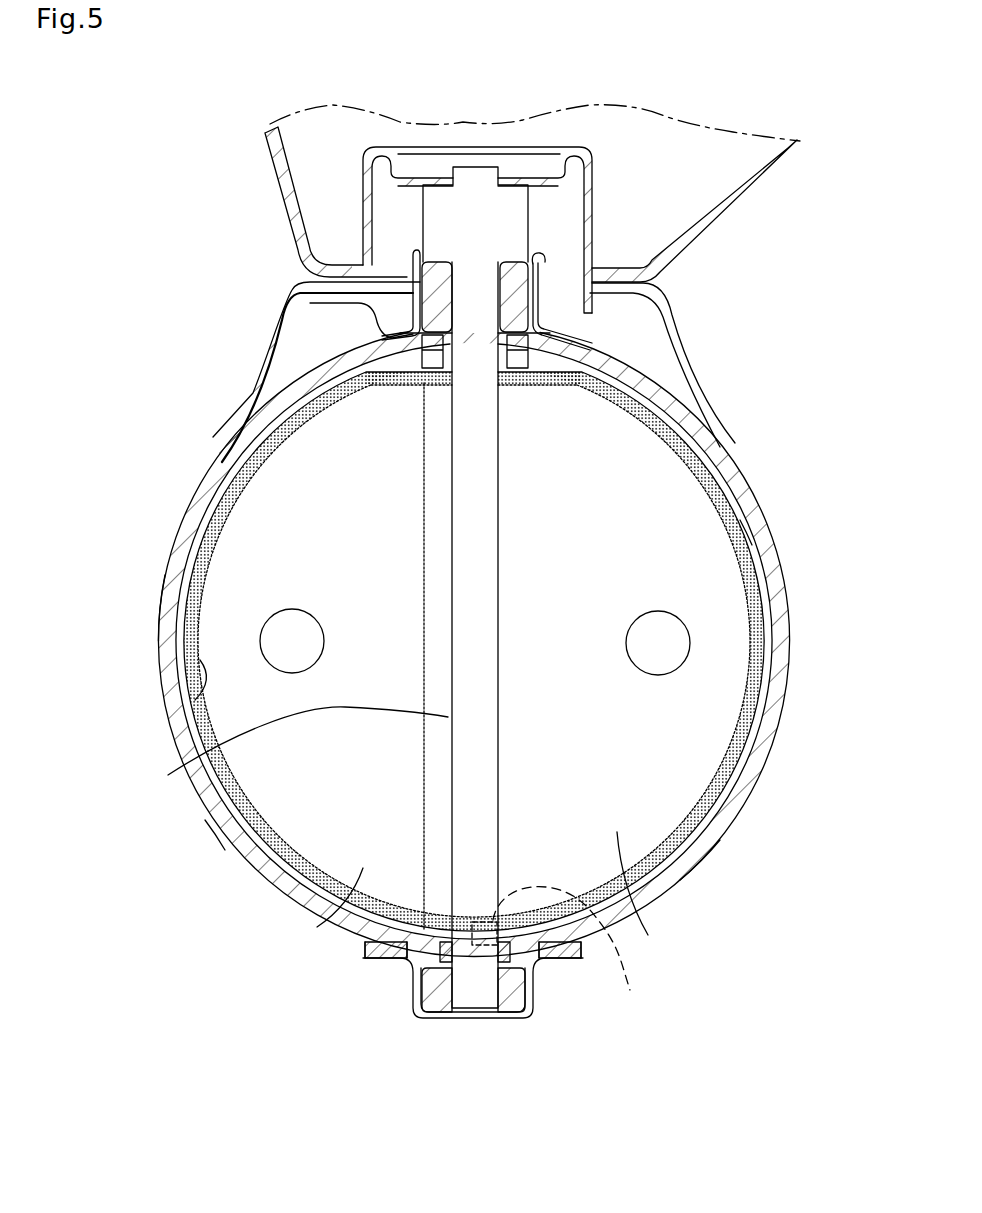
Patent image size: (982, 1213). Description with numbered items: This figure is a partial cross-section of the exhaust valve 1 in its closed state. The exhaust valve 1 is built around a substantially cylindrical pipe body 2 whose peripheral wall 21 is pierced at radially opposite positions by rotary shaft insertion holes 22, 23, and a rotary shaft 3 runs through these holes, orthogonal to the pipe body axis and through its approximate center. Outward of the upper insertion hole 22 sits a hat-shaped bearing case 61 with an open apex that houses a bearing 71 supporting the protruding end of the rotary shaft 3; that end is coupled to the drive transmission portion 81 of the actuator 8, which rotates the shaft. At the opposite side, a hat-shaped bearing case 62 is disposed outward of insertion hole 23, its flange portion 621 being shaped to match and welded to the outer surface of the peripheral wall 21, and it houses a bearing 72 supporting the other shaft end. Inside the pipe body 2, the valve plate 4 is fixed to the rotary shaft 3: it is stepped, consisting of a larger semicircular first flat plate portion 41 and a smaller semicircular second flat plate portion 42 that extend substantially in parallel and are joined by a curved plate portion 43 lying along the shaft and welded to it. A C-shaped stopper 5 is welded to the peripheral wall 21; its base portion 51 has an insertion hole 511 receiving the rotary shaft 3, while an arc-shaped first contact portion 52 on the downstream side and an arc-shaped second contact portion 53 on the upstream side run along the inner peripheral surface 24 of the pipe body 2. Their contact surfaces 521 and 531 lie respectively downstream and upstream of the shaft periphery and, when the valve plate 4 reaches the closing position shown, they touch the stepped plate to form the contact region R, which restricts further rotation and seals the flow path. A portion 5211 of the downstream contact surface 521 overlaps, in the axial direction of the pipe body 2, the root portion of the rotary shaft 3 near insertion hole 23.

The exhaust valve 1 is at (466, 649).
The pipe body 2 is at (472, 694).
The peripheral wall 21 is at (697, 867).
The rotary shaft insertion hole 22 is at (300, 303).
The rotary shaft insertion hole 23 is at (508, 942).
The inner peripheral surface 24 is at (195, 672).
The rotary shaft 3 is at (588, 627).
The valve plate 4 is at (451, 669).
The first flat plate portion 41 is at (623, 898).
The second flat plate portion 42 is at (323, 922).
The curved plate portion 43 is at (217, 748).
The stopper 5 is at (464, 649).
The base portion 51 is at (480, 620).
The insertion hole 511 is at (420, 356).
The first contact portion 52 is at (772, 660).
The contact surface 521 is at (743, 780).
The portion of the contact surface 5211 is at (594, 951).
The second contact portion 53 is at (160, 602).
The contact surface 531 is at (218, 838).
The bearing case 61 is at (556, 308).
The bearing case 62 is at (452, 1002).
The flange portion 621 is at (380, 952).
The bearing 71 is at (432, 283).
The bearing 72 is at (507, 1000).
The actuator 8 is at (745, 187).
The drive transmission portion 81 is at (528, 212).
The contact region R is at (733, 528).